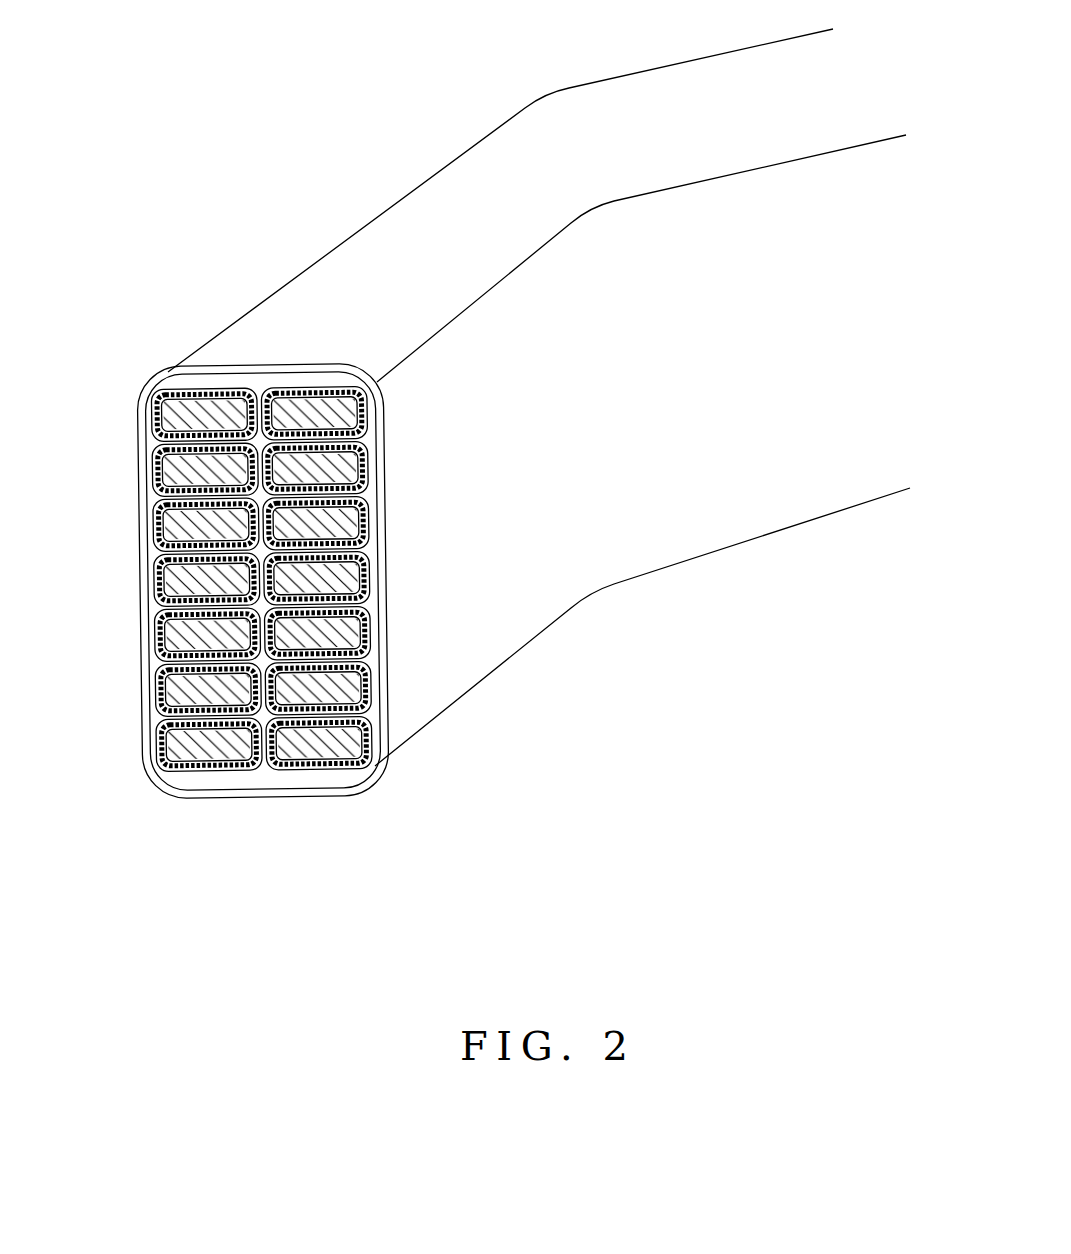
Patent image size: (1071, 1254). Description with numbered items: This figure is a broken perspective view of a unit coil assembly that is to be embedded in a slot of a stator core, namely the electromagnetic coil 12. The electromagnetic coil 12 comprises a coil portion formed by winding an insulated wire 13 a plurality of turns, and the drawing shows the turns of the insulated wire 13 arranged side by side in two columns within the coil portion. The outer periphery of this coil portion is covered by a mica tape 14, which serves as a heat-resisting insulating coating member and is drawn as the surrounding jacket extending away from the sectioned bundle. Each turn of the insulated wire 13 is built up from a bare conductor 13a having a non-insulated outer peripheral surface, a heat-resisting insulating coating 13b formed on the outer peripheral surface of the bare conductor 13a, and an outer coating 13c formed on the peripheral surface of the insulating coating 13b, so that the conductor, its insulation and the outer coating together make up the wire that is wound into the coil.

The electromagnetic coil 12 is at (136, 773).
The insulated wire 13 is at (278, 502).
The bare conductor 13a is at (153, 393).
The heat-resisting insulating coating 13b is at (209, 390).
The outer coating 13c is at (158, 422).
The mica tape 14 is at (722, 510).